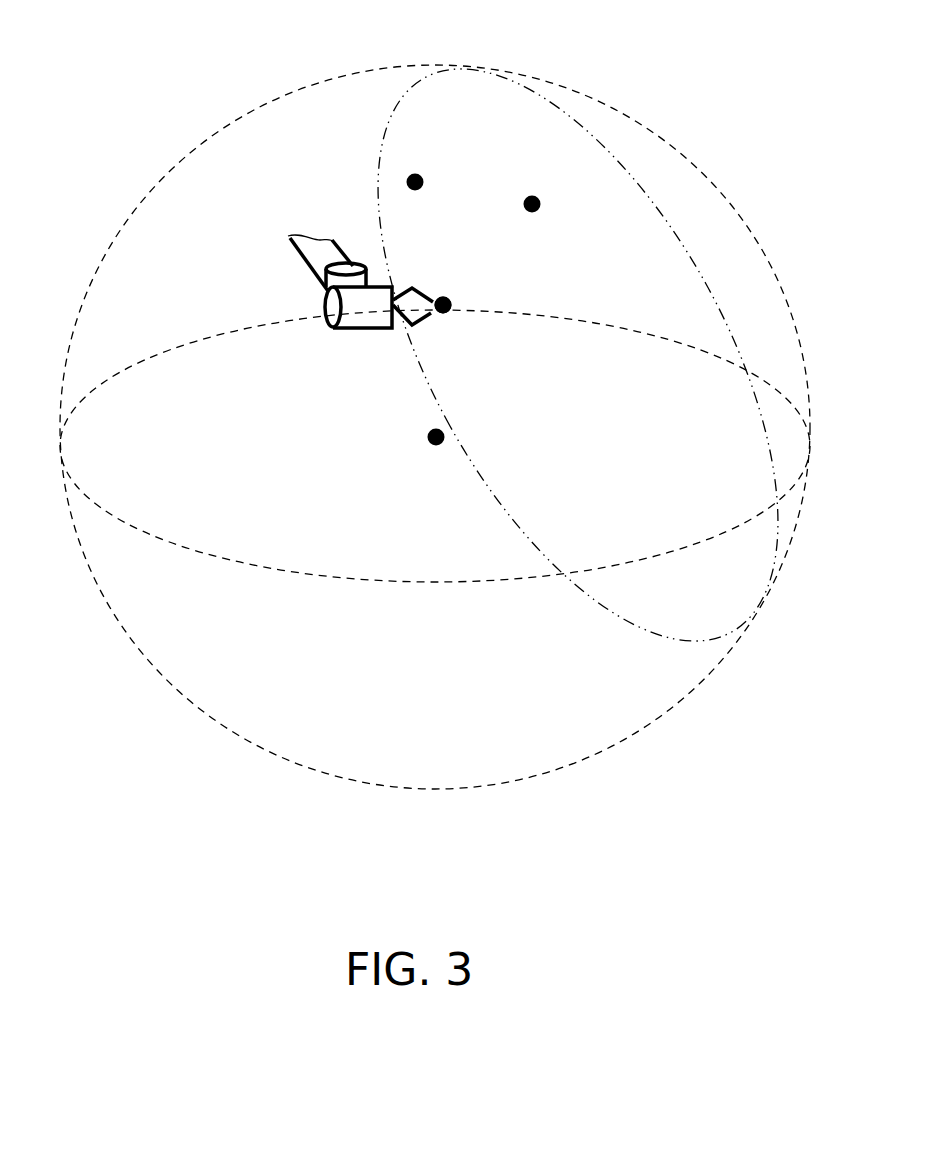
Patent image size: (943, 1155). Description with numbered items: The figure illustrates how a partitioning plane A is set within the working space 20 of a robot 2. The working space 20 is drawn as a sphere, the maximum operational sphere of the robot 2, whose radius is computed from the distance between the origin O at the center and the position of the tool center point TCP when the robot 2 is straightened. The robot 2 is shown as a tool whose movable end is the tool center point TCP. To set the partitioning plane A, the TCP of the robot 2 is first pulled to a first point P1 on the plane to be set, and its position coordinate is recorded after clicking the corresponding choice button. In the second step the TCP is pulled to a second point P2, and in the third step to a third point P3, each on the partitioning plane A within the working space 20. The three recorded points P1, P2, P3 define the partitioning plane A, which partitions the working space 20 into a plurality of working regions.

The working space 20 is at (163, 173).
The robot 2 is at (305, 260).
The partitioning plane A is at (580, 127).
The first point P1 is at (462, 285).
The second point P2 is at (429, 160).
The third point P3 is at (563, 203).
The origin O is at (431, 458).
The tool center point TCP is at (445, 314).